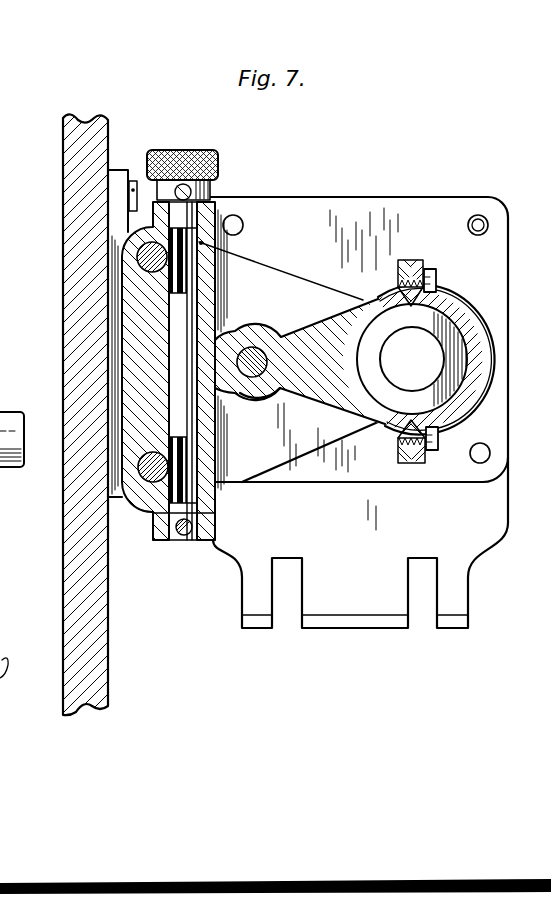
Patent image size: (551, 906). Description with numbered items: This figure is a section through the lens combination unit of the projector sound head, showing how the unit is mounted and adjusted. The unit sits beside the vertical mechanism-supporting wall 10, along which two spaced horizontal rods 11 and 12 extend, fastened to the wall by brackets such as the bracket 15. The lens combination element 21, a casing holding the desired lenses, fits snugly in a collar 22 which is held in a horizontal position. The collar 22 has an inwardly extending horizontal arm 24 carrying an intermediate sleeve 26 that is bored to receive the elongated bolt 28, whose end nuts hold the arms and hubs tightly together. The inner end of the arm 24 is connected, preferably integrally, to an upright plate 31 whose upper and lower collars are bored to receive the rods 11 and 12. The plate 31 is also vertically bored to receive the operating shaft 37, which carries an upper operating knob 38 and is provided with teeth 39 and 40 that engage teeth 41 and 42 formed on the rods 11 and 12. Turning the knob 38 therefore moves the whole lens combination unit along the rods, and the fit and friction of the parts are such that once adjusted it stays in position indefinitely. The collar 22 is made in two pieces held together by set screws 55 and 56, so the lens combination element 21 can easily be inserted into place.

The mechanism-supporting wall 10 is at (75, 208).
The rod 11 is at (140, 272).
The rod 12 is at (124, 430).
The bracket 15 is at (117, 178).
The lens combination element 21 is at (372, 356).
The collar 22 is at (488, 394).
The horizontal arm 24 is at (338, 331).
The intermediate sleeve 26 is at (254, 334).
The elongated bolt 28 is at (253, 392).
The upright plate 31 is at (250, 260).
The operating shaft 37 is at (181, 362).
The operating knob 38 is at (199, 151).
The teeth 39 is at (203, 244).
The teeth 40 is at (217, 492).
The teeth 41 is at (138, 250).
The teeth 42 is at (150, 481).
The set screw 55 is at (437, 280).
The set screw 56 is at (437, 445).